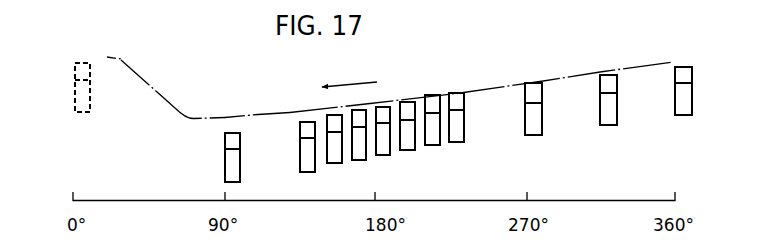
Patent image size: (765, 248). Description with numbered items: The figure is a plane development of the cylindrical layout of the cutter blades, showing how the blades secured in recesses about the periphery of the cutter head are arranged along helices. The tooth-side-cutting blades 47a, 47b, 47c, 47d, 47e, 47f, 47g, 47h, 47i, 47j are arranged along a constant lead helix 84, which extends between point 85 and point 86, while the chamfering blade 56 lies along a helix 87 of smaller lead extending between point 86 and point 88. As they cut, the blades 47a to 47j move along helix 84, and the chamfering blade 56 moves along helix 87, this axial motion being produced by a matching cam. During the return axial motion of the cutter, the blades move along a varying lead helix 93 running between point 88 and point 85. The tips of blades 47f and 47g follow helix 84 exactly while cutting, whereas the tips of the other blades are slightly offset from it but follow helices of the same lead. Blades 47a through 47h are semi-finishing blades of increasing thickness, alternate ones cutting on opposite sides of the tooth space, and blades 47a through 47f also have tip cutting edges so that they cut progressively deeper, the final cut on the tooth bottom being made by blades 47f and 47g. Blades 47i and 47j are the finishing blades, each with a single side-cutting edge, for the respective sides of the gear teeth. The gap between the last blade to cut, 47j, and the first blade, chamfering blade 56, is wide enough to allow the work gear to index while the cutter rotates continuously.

The constant lead helix 84 is at (535, 82).
The point 85 is at (106, 56).
The point 86 is at (270, 116).
The helix 87 is at (250, 111).
The point 88 is at (195, 118).
The varying lead helix 93 is at (161, 66).
The chamfering blade 56 is at (225, 154).
The tooth-side-cutting blade 47a is at (300, 165).
The tooth-side-cutting blade 47b is at (337, 155).
The tooth-side-cutting blade 47c is at (357, 150).
The tooth-side-cutting blade 47d is at (380, 147).
The tooth-side-cutting blade 47e is at (410, 147).
The tooth-side-cutting blade 47f is at (433, 140).
The tooth-side-cutting blade 47g is at (462, 132).
The tooth-side-cutting blade 47h is at (533, 128).
The finishing blade 47i is at (608, 122).
The finishing blade 47j is at (682, 107).